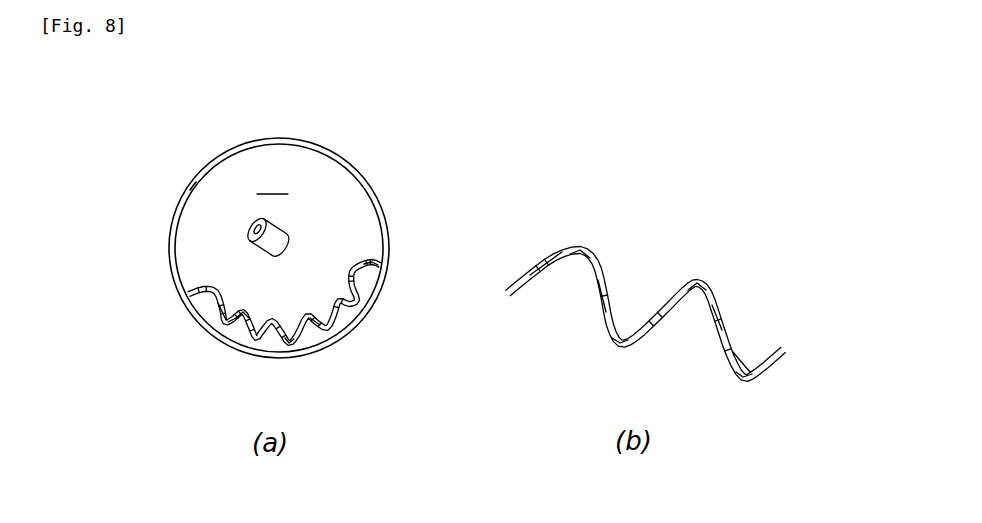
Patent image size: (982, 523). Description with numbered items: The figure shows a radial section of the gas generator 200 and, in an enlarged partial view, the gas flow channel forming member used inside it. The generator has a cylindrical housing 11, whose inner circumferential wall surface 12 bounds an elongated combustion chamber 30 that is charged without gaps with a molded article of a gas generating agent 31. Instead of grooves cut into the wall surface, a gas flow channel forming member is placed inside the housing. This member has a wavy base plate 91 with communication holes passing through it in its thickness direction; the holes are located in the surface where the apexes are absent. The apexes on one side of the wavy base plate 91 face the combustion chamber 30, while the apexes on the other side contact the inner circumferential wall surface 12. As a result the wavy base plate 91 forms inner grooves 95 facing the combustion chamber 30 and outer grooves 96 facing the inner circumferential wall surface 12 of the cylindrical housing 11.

The gas generator 200 is at (326, 143).
The cylindrical housing 11 is at (265, 138).
The inner circumferential wall surface 12 is at (202, 190).
The combustion chamber 30 is at (273, 184).
The gas generating agent 31 is at (281, 221).
The wavy base plate 91 is at (562, 252).
The inner grooves 95 is at (227, 312).
The outer grooves 96 is at (238, 325).